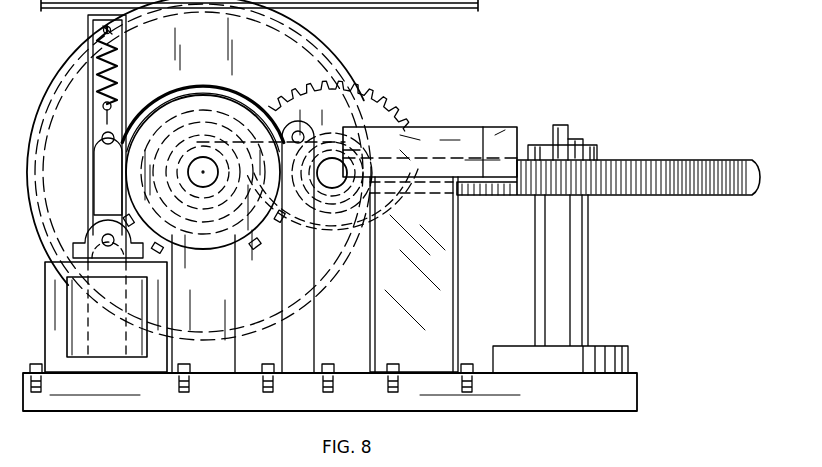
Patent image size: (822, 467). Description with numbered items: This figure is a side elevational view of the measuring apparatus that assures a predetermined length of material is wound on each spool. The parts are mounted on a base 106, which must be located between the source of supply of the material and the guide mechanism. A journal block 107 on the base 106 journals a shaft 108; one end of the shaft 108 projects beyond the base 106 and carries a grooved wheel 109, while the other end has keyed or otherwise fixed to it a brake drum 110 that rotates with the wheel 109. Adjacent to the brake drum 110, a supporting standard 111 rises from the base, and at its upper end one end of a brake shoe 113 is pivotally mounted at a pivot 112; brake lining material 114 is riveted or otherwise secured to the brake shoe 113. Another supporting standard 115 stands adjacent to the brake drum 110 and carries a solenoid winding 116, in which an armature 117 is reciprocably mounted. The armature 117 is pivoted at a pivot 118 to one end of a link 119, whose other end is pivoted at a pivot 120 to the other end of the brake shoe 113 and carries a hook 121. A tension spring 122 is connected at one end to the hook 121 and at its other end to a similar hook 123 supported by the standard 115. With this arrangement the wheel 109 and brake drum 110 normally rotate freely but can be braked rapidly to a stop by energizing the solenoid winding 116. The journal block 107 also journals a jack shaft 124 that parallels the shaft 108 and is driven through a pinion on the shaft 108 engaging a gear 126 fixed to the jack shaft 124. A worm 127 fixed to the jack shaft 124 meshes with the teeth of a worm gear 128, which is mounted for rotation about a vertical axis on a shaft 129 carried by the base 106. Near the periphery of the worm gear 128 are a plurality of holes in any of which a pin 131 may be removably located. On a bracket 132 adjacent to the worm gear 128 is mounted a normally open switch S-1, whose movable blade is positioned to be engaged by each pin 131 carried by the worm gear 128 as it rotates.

The base 106 is at (630, 397).
The journal block 107 is at (236, 298).
The shaft 108 is at (205, 162).
The grooved wheel 109 is at (302, 50).
The brake drum 110 is at (205, 238).
The supporting standard 111 is at (307, 330).
The pivot 112 is at (303, 128).
The brake shoe 113 is at (213, 88).
The brake lining material 114 is at (176, 98).
The supporting standard 115 is at (93, 115).
The solenoid winding 116 is at (82, 325).
The armature 117 is at (80, 245).
The pivot 118 is at (108, 232).
The link 119 is at (103, 165).
The pivot 120 is at (100, 140).
The hook 121 is at (118, 96).
The tension spring 122 is at (112, 70).
The hook 123 is at (120, 38).
The jack shaft 124 is at (334, 185).
The gear 126 is at (388, 113).
The worm 127 is at (373, 148).
The worm gear 128 is at (643, 157).
The shaft 129 is at (575, 140).
The pin 131 is at (558, 127).
The bracket 132 is at (458, 283).
The normally open switch S-1 is at (454, 116).